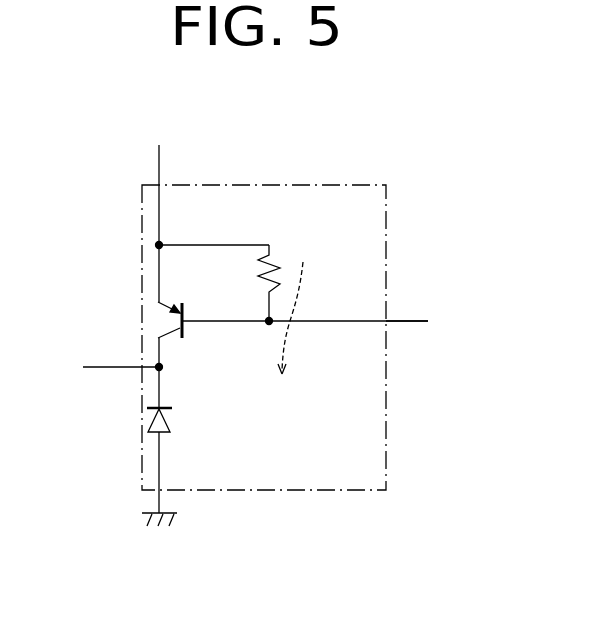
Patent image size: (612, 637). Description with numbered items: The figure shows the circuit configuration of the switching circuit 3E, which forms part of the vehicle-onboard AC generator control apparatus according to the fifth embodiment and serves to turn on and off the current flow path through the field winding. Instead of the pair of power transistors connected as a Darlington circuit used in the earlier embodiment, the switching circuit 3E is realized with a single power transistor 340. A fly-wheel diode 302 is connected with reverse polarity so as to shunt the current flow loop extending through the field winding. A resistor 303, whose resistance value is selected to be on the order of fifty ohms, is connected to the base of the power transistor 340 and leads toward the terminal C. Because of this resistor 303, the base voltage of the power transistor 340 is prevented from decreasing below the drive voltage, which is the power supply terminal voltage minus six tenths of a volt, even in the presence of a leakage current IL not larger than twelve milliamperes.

The switching circuit 3E is at (271, 184).
The resistor 303 is at (281, 276).
The power transistor 340 is at (187, 333).
The fly-wheel diode 302 is at (176, 424).
The leakage current IL is at (307, 318).
The output terminal C is at (411, 325).